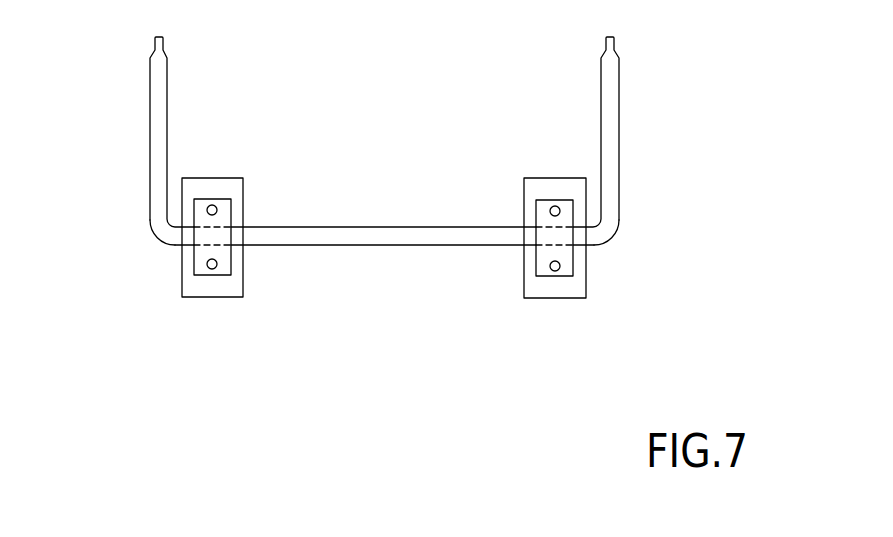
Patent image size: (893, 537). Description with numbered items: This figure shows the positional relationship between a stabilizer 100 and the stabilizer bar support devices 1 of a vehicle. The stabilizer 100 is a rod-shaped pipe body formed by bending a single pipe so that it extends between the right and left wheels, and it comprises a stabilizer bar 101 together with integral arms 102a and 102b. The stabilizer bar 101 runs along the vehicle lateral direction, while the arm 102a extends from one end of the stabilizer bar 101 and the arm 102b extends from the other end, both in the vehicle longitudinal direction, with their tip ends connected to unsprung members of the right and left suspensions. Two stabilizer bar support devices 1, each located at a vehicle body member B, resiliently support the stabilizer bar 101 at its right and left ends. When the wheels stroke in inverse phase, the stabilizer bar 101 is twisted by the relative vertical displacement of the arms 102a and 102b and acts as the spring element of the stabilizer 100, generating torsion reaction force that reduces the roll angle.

The stabilizer 100 is at (385, 141).
The stabilizer bar 101 is at (373, 227).
The arm 102a is at (619, 172).
The arm 102b is at (150, 163).
The vehicle body member B is at (243, 192).
The stabilizer bar support device 1 is at (228, 284).